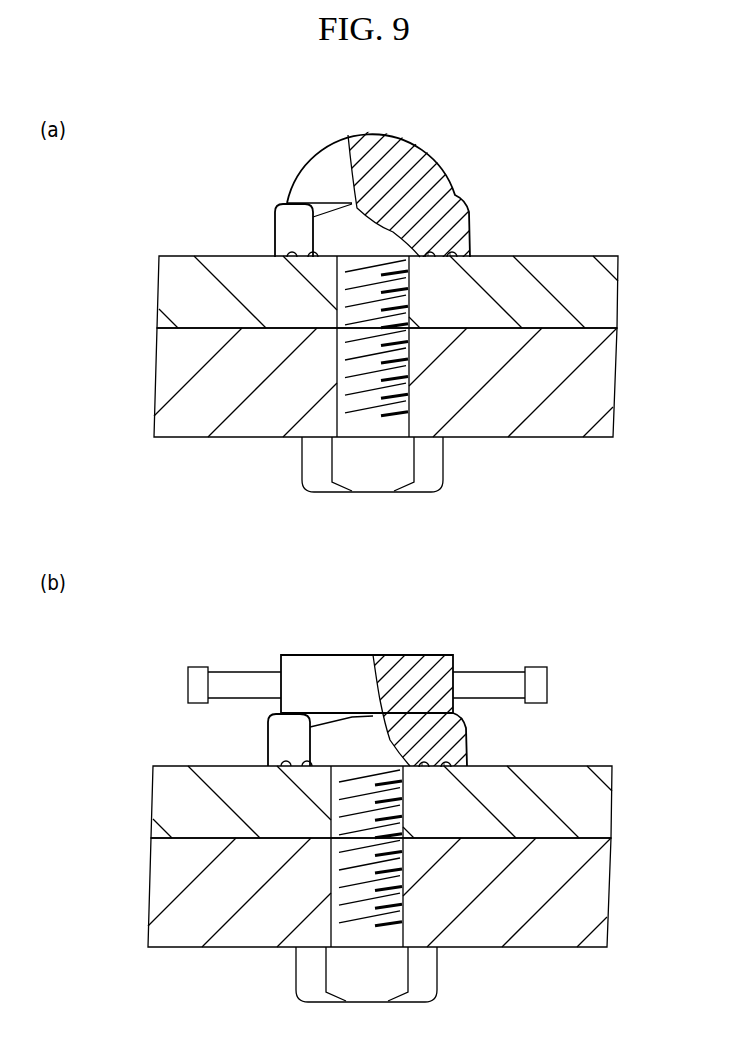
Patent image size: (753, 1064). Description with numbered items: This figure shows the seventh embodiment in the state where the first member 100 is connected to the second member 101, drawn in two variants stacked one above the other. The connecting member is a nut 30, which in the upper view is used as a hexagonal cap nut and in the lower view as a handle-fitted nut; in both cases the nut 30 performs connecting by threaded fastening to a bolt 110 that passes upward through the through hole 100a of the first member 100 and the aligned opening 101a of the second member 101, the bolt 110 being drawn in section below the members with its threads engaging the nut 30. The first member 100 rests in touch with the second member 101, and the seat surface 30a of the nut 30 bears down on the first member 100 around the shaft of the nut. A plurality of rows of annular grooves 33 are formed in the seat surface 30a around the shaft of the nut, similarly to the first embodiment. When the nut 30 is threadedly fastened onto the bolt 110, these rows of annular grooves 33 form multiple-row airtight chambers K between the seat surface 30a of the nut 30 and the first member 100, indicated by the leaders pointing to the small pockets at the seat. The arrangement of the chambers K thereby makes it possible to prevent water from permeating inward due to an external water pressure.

The nut 30 is at (270, 155).
The seat surface 30a is at (292, 268).
The annular grooves 33 is at (452, 266).
The airtight chambers K is at (455, 247).
The first member 100 is at (192, 282).
The through hole 100a is at (349, 301).
The second member 101 is at (232, 424).
The through hole of second panel 101a is at (346, 346).
The bolt 110 is at (375, 478).